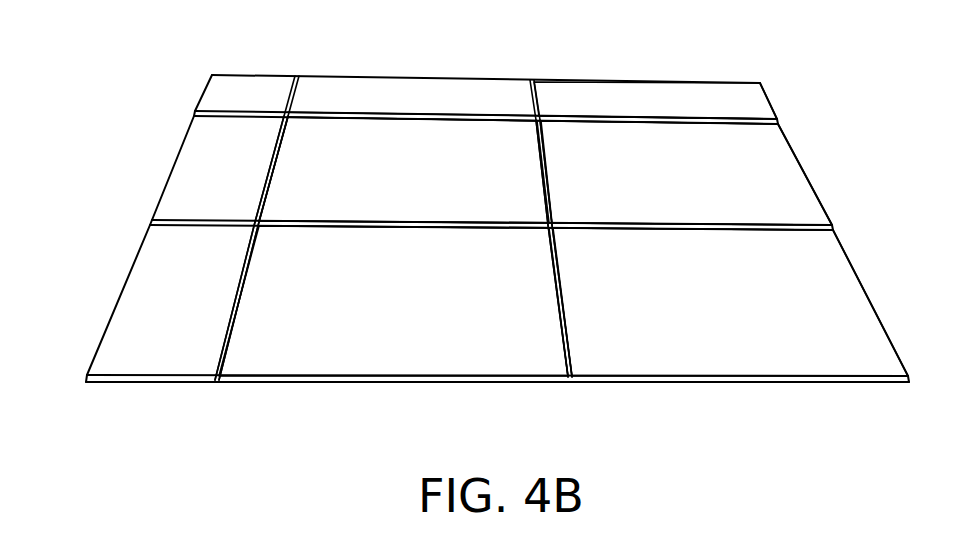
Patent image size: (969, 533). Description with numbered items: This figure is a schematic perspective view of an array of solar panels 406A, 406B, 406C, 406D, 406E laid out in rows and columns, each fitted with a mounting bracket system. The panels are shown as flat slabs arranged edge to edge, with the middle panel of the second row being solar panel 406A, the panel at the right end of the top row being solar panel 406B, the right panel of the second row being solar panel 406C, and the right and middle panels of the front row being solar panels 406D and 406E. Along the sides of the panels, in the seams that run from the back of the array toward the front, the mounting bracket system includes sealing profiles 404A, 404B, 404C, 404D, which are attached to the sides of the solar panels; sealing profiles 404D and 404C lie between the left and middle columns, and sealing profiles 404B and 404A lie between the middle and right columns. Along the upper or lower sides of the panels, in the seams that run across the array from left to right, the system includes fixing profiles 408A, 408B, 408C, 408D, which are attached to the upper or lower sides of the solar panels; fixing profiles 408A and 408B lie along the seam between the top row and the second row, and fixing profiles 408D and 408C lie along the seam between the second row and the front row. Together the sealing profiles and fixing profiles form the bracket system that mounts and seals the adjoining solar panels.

The sealing profile 404A is at (552, 265).
The sealing profile 404B is at (542, 175).
The sealing profile 404C is at (235, 312).
The sealing profile 404D is at (270, 177).
The solar panel 406A is at (455, 137).
The solar panel 406B is at (658, 98).
The solar panel 406C is at (742, 192).
The solar panel 406D is at (785, 310).
The solar panel 406E is at (377, 270).
The fixing profile 408A is at (383, 118).
The fixing profile 408B is at (753, 125).
The fixing profile 408C is at (717, 233).
The fixing profile 408D is at (447, 227).